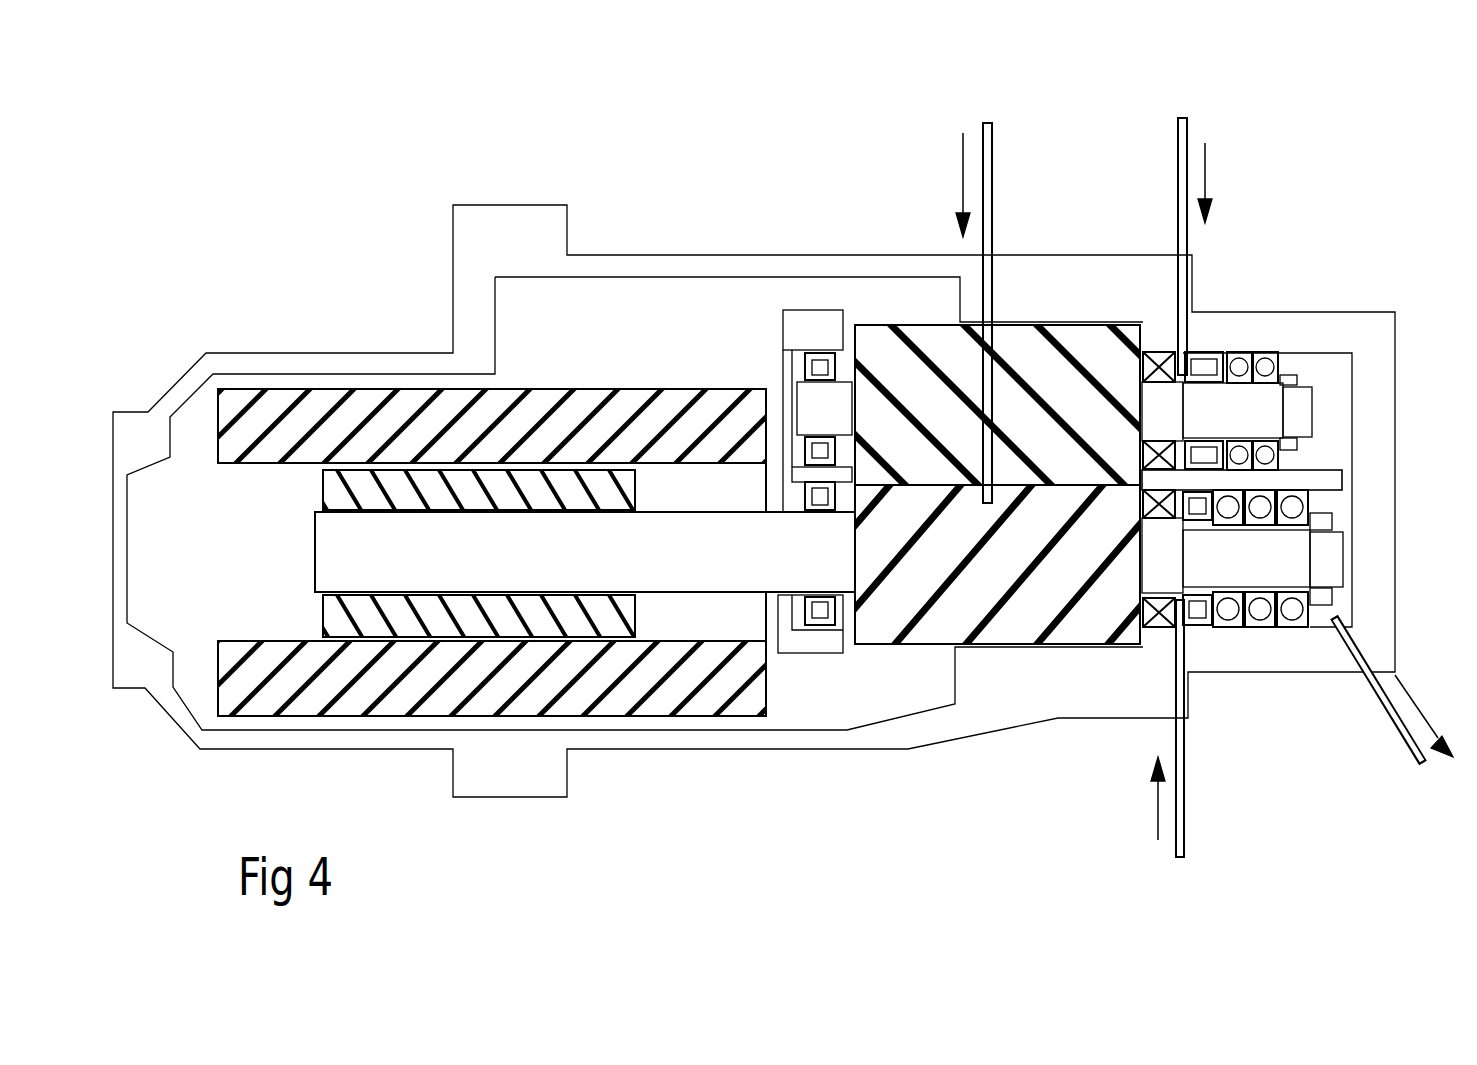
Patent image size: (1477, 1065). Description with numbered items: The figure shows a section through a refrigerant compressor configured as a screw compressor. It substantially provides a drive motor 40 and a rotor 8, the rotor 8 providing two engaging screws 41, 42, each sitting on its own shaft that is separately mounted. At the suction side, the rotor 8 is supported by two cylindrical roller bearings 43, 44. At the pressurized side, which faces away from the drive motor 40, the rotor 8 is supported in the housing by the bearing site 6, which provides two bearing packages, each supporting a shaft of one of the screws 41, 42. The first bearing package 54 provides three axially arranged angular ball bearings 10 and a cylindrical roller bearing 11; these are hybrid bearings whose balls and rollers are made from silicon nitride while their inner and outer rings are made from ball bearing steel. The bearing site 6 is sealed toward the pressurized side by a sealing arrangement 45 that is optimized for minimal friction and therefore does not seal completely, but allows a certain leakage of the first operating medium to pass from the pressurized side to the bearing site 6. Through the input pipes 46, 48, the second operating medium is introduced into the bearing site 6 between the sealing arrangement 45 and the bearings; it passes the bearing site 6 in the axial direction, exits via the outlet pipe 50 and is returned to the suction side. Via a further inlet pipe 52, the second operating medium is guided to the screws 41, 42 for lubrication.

The bearing site 6 is at (1288, 262).
The rotor 8 is at (897, 700).
The angular ball bearing 10 is at (1303, 628).
The cylindrical roller bearing 11 is at (1197, 625).
The drive motor 40 is at (412, 622).
The screw 41 is at (1019, 613).
The screw 42 is at (1043, 447).
The cylindrical roller bearing 43 is at (805, 355).
The cylindrical roller bearing 44 is at (808, 632).
The sealing arrangement 45 is at (1152, 345).
The input pipe 46 is at (1181, 114).
The input pipe 48 is at (1178, 858).
The outlet pipe 50 is at (1387, 730).
The inlet pipe 52 is at (992, 112).
The first bearing package 54 is at (1262, 660).